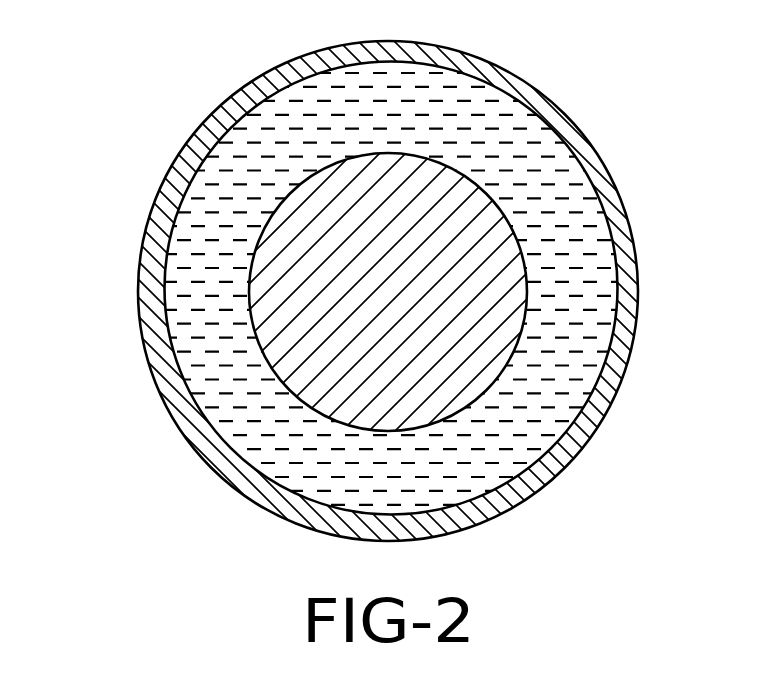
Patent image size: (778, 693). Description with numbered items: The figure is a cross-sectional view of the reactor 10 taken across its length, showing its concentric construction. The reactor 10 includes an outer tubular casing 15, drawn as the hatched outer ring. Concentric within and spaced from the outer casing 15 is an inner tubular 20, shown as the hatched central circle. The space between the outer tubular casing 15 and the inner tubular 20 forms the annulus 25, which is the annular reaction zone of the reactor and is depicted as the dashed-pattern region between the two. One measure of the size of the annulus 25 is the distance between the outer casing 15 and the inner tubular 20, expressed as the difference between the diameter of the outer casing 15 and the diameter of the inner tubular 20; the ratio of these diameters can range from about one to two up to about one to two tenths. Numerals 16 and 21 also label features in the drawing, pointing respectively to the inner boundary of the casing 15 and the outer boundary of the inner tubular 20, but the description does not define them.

The reactor 10 is at (389, 346).
The outer tubular casing 15 is at (577, 443).
The inner surface of jacket 16 is at (612, 343).
The inner tubular 20 is at (492, 262).
The outer surface of core 21 is at (520, 345).
The annulus 25 is at (493, 150).